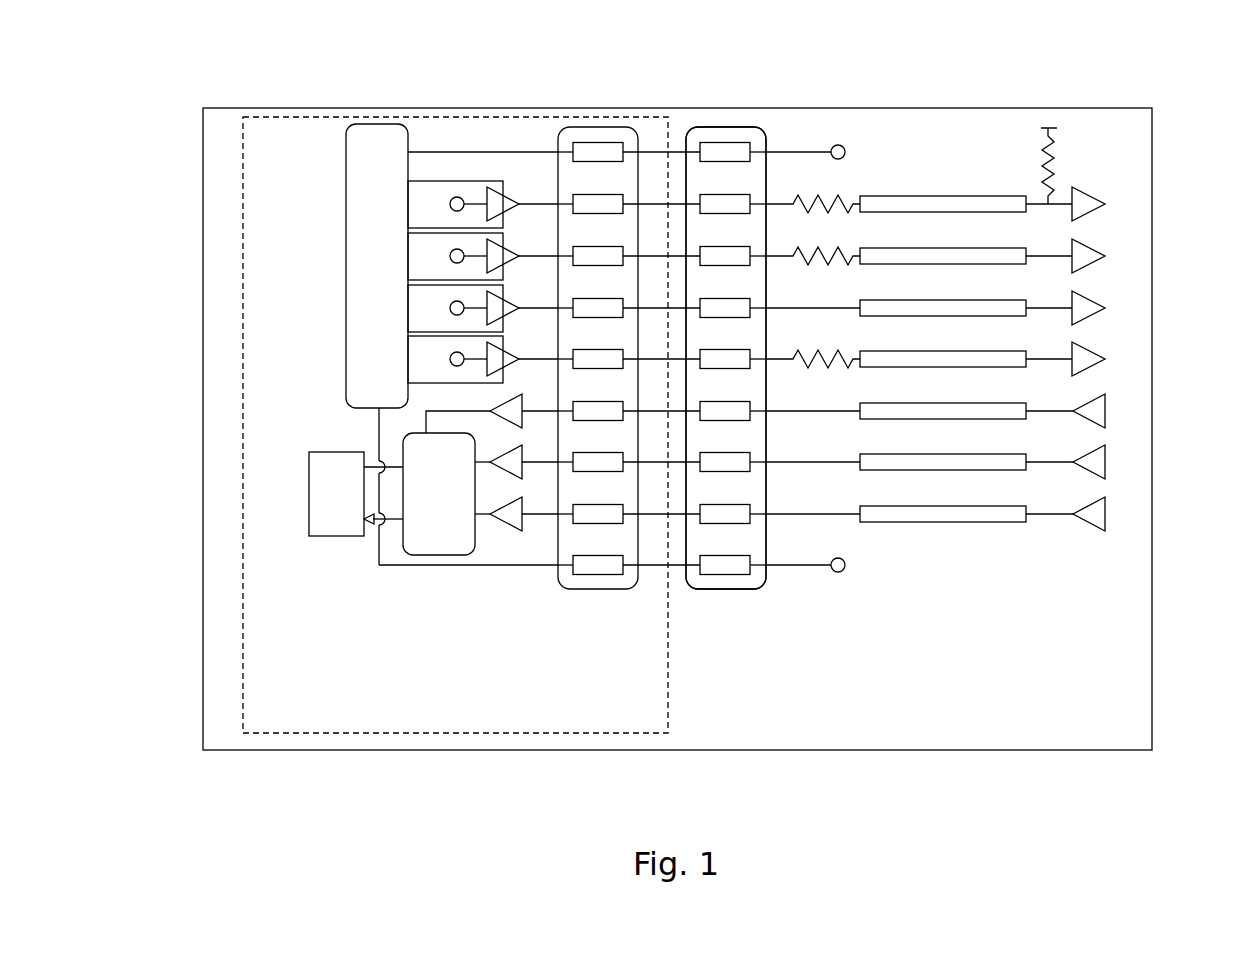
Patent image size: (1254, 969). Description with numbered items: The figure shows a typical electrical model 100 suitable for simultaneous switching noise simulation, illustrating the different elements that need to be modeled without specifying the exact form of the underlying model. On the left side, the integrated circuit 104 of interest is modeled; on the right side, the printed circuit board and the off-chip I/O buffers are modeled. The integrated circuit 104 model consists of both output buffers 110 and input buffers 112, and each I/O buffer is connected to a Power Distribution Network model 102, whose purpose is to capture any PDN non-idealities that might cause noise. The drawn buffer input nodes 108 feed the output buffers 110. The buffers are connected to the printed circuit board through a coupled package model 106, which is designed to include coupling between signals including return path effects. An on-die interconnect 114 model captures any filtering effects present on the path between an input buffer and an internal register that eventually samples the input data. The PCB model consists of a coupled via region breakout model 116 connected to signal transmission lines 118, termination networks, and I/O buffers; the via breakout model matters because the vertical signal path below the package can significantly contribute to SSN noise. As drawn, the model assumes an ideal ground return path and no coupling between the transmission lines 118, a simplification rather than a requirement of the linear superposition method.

The signal integrity simulation model 100 is at (1185, 150).
The Power Distribution Network (PDN) model 102 is at (347, 215).
The integrated circuit 104 is at (243, 212).
The coupled package model 106 is at (634, 127).
The on-die driver input sources 108 is at (492, 221).
The output buffers 110 is at (499, 186).
The input buffers 112 is at (507, 522).
The on-die interconnect 114 is at (455, 556).
The coupled via region breakout model 116 is at (746, 127).
The signal transmission lines 118 is at (953, 544).